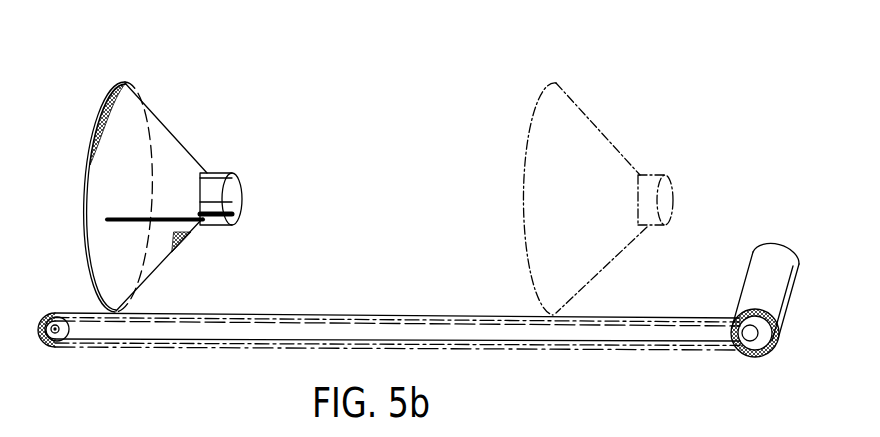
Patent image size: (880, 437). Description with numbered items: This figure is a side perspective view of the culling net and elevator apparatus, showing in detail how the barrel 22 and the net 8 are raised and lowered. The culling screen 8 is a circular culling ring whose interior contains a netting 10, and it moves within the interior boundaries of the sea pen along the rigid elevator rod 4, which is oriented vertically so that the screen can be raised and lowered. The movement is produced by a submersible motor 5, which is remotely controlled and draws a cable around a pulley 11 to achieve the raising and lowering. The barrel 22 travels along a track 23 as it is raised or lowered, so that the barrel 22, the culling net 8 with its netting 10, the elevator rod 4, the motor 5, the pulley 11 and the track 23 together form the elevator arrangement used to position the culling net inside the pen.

The elevator rod 4 is at (257, 328).
The submersible motor 5 is at (742, 280).
The culling screen 8 is at (93, 135).
The netting 10 is at (112, 122).
The pulley 11 is at (46, 317).
The barrel 22 is at (238, 209).
The track 23 is at (128, 217).